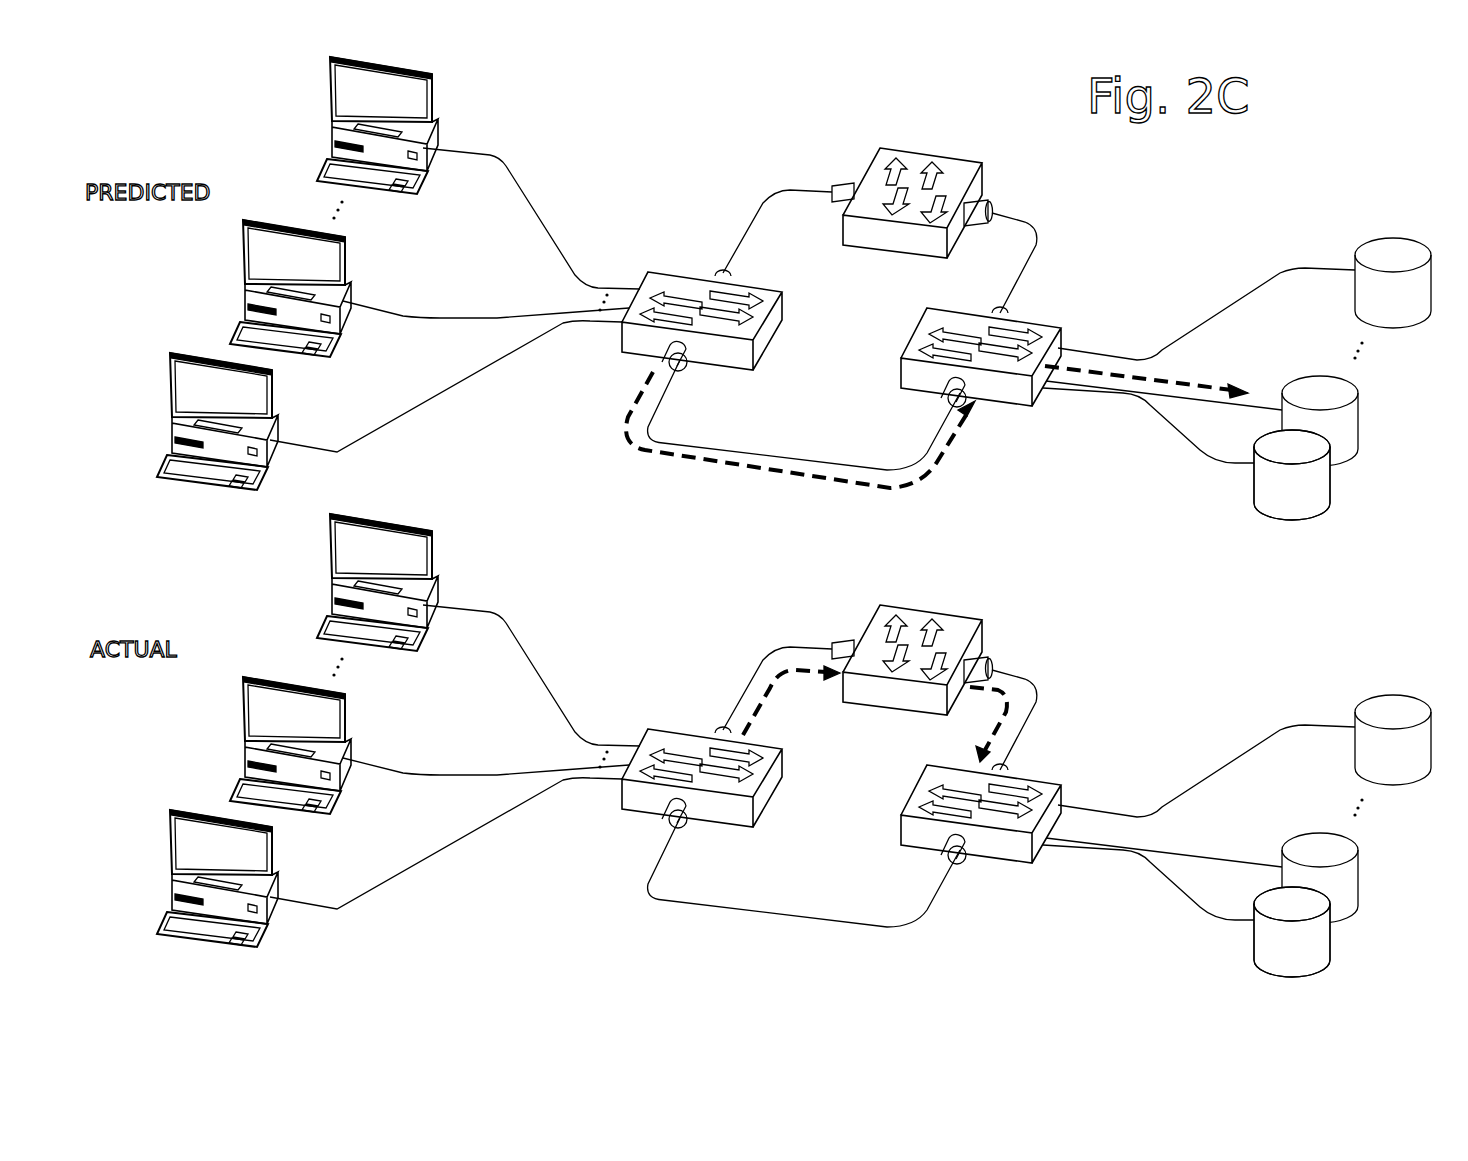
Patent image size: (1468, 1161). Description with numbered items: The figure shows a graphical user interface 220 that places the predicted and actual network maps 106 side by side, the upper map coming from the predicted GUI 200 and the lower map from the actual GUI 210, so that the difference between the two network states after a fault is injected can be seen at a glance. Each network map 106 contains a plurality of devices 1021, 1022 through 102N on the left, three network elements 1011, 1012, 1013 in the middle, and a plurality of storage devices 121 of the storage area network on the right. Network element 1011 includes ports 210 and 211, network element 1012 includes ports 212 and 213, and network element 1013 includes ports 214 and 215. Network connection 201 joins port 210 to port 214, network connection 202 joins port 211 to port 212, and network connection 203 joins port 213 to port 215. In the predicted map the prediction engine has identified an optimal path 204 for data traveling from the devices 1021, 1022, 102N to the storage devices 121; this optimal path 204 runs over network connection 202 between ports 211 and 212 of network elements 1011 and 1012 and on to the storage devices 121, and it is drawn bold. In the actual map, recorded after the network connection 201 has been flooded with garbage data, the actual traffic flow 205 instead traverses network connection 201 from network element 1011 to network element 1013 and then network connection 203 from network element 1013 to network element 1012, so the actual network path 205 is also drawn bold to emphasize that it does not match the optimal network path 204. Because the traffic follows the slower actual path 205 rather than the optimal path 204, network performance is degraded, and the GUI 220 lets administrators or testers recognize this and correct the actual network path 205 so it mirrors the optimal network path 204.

The device 102N is at (332, 598).
The device 1022 is at (244, 761).
The device 1021 is at (172, 894).
The network element 1011 is at (613, 829).
The network element 1012 is at (897, 864).
The network element 1013 is at (833, 719).
The network map 106 is at (545, 466).
The storage devices 121 is at (1357, 483).
The graphical user interface 200 is at (1266, 222).
The network connection 201 is at (776, 186).
The network connection 202 is at (818, 460).
The network connection 203 is at (1037, 245).
The optimal path 204 is at (783, 477).
The actual traffic flow 205 is at (762, 705).
The port 210 is at (1320, 628).
The port 211 is at (686, 368).
The port 212 is at (982, 400).
The port 213 is at (1008, 312).
The port 214 is at (840, 641).
The port 215 is at (988, 661).
The graphical user interface 220 is at (1345, 136).